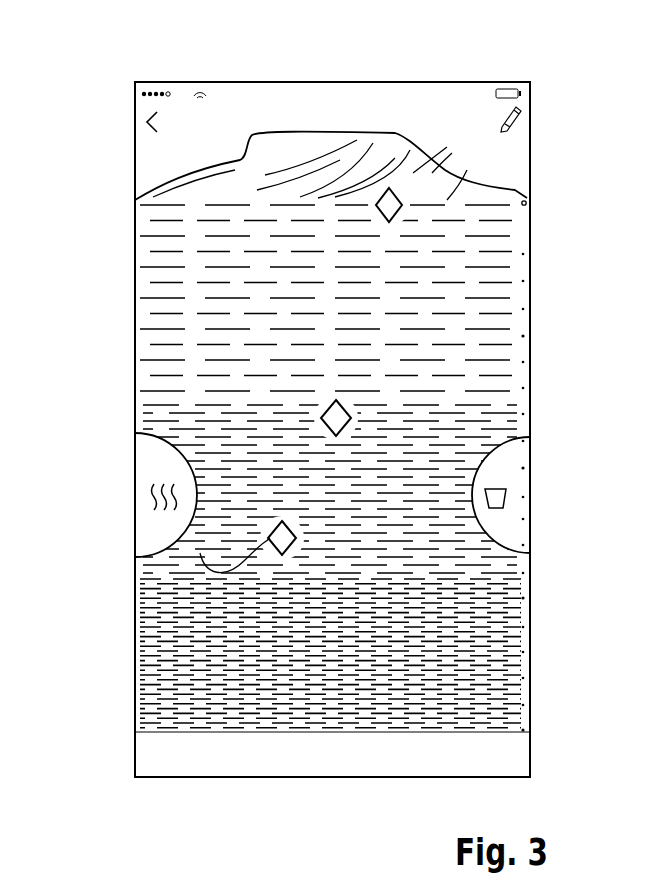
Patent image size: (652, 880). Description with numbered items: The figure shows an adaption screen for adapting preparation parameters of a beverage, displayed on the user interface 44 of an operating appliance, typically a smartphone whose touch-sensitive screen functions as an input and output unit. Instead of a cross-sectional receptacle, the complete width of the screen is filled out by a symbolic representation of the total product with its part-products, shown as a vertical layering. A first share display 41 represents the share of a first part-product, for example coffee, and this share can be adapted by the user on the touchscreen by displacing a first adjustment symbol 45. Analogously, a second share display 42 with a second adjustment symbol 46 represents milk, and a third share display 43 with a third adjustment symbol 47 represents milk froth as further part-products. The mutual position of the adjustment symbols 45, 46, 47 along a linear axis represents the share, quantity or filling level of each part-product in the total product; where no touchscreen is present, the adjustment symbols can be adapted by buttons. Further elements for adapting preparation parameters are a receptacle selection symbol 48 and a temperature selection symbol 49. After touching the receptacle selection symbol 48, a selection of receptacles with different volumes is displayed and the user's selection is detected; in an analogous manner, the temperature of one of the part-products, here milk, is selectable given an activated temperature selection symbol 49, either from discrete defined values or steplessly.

The first share display 41 is at (468, 647).
The second share display 42 is at (423, 470).
The third share display 43 is at (435, 322).
The user interface 44 is at (84, 59).
The first adjustment symbol 45 is at (268, 544).
The second adjustment symbol 46 is at (320, 417).
The third adjustment symbol 47 is at (378, 208).
The receptacle selection symbol 48 is at (513, 505).
The temperature selection symbol 49 is at (143, 497).